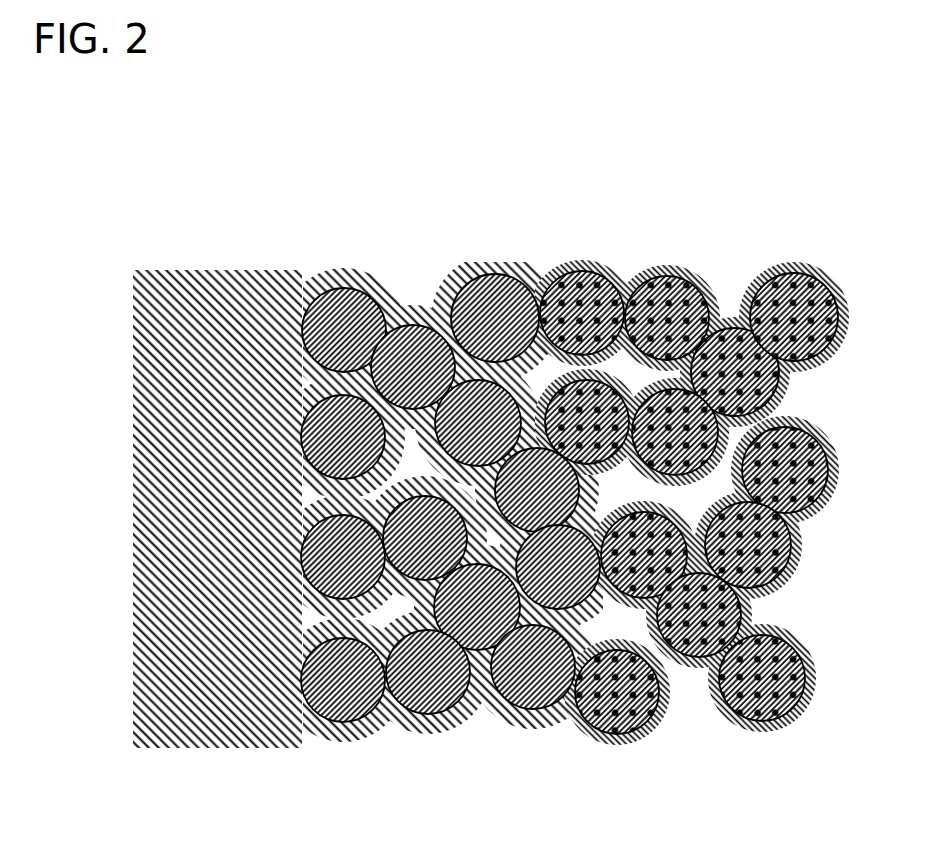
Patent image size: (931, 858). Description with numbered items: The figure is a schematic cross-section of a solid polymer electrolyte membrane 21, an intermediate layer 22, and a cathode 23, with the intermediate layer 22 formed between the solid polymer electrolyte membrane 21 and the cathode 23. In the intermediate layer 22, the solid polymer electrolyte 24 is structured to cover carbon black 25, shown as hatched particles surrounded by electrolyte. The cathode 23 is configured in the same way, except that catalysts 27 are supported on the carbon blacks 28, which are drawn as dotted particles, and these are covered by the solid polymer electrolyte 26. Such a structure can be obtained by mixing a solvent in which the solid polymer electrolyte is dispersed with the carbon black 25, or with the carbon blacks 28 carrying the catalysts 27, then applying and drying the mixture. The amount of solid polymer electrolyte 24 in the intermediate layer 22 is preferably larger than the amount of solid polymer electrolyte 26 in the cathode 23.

The solid polymer electrolyte membrane 21 is at (293, 775).
The intermediate layer 22 is at (578, 493).
The cathode 23 is at (710, 498).
The solid polymer electrolyte 24 is at (343, 290).
The carbon black 25 is at (490, 296).
The solid polymer electrolyte 26 is at (661, 272).
The catalysts 27 is at (810, 275).
The carbon blacks 28 is at (816, 438).